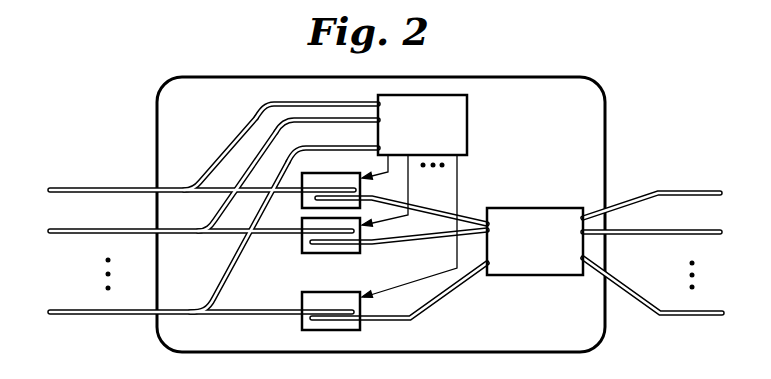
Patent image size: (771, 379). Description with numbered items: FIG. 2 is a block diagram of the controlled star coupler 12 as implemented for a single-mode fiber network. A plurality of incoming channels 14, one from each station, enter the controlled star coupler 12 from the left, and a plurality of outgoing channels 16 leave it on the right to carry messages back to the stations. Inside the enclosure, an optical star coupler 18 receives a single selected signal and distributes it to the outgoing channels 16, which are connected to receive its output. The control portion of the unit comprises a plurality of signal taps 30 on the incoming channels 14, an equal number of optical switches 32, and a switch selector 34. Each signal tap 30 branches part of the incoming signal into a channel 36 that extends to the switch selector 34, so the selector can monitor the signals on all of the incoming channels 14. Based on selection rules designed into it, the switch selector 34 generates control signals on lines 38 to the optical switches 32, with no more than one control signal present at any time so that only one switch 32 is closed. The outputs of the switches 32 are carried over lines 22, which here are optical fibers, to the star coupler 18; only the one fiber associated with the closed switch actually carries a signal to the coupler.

The controlled star coupler 12 is at (607, 102).
The incoming channels 14 is at (83, 188).
The outgoing channels 16 is at (720, 229).
The optical star coupler 18 is at (556, 276).
The lines 22 is at (437, 211).
The signal taps 30 is at (186, 215).
The optical switches 32 is at (302, 238).
The switch selector 34 is at (467, 109).
The channels 36 is at (318, 101).
The lines 38 is at (390, 170).